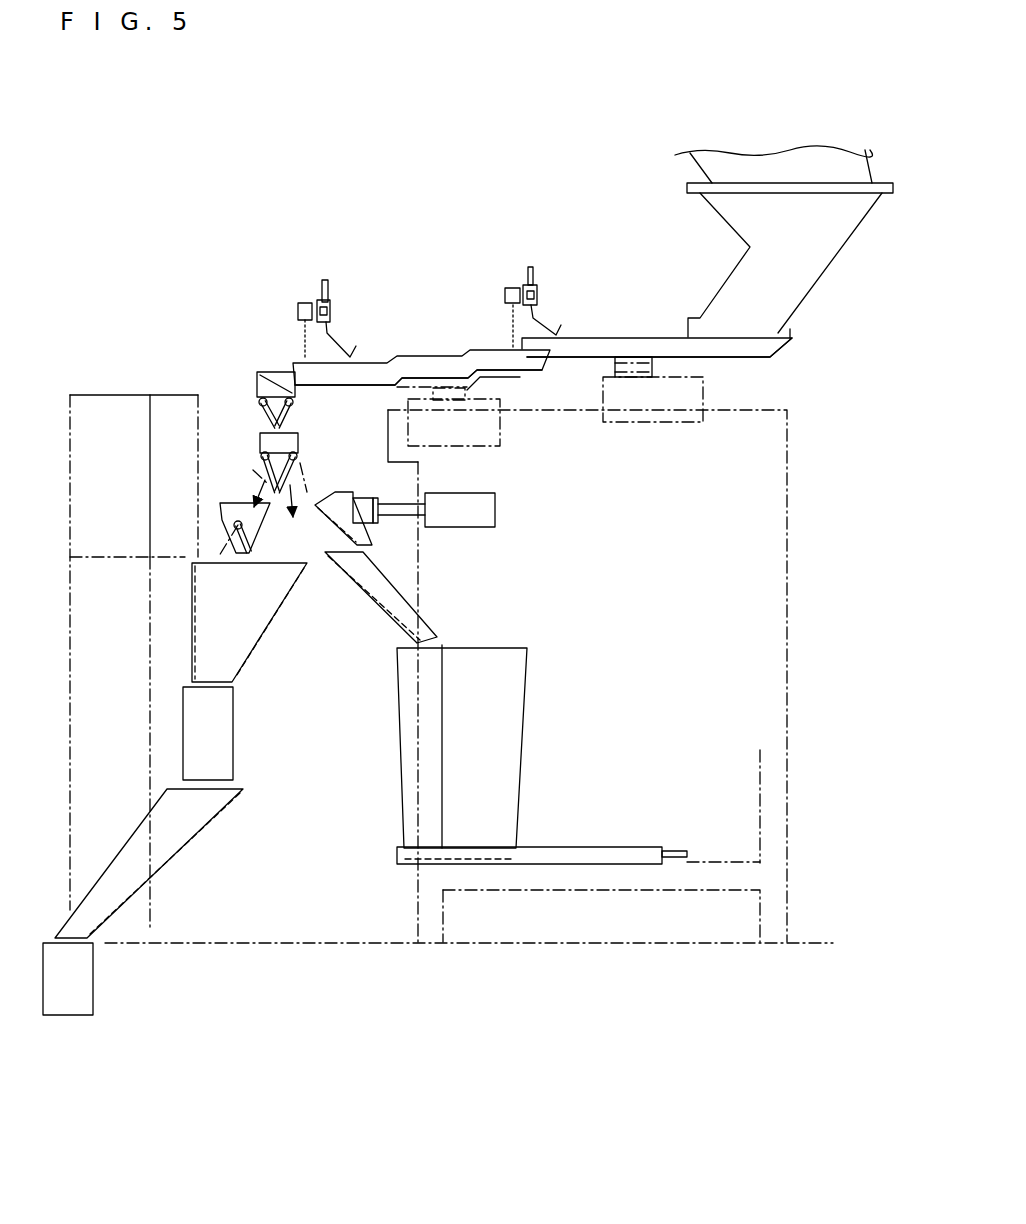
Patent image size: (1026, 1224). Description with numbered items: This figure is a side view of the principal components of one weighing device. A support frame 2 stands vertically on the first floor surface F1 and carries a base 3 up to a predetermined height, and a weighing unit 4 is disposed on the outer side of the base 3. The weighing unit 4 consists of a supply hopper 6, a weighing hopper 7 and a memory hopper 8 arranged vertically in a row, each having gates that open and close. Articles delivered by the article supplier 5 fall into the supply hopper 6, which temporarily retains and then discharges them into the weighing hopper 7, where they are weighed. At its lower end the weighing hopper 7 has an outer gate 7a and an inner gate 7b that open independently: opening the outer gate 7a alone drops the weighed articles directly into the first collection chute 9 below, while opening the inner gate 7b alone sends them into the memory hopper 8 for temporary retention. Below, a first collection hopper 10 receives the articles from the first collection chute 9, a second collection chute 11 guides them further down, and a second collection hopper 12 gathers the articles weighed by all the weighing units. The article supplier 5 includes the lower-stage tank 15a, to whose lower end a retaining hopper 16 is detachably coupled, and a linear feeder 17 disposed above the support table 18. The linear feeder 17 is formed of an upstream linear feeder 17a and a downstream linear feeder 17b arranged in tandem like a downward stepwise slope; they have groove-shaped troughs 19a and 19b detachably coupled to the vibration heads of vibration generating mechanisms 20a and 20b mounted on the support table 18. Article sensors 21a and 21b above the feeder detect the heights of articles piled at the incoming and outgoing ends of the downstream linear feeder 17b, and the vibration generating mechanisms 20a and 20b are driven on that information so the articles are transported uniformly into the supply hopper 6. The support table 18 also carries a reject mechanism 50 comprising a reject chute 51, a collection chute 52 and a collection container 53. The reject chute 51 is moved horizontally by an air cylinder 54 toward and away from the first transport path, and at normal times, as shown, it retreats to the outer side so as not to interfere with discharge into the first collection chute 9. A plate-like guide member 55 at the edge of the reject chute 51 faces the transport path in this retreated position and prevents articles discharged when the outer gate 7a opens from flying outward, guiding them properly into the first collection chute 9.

The support frame 2 is at (152, 648).
The base 3 is at (93, 392).
The weighing unit 4 is at (242, 408).
The article supplier 5 is at (394, 226).
The supply hopper 6 is at (272, 364).
The weighing hopper 7 is at (274, 451).
The outer gate 7a is at (296, 476).
The inner gate 7b is at (258, 480).
The memory hopper 8 is at (222, 513).
The first collection chute 9 is at (272, 617).
The first collection hopper 10 is at (233, 722).
The second collection chute 11 is at (190, 843).
The second collection hopper 12 is at (95, 983).
The lower-stage tank 15a is at (703, 168).
The retaining hopper 16 is at (715, 296).
The linear feeder 17 is at (623, 255).
The upstream linear feeder 17a is at (626, 332).
The downstream linear feeder 17b is at (416, 354).
The support table 18 is at (790, 576).
The trough 19a is at (737, 351).
The trough 19b is at (360, 383).
The vibration generating mechanism 20a is at (683, 423).
The vibration generating mechanism 20b is at (500, 437).
The article sensor 21a is at (505, 297).
The article sensor 21b is at (298, 312).
The reject mechanism 50 is at (386, 545).
The reject chute 51 is at (342, 489).
The collection chute 52 is at (378, 608).
The collection container 53 is at (520, 748).
The air cylinder 54 is at (475, 486).
The guide member 55 is at (313, 536).
The first floor surface F1 is at (823, 940).